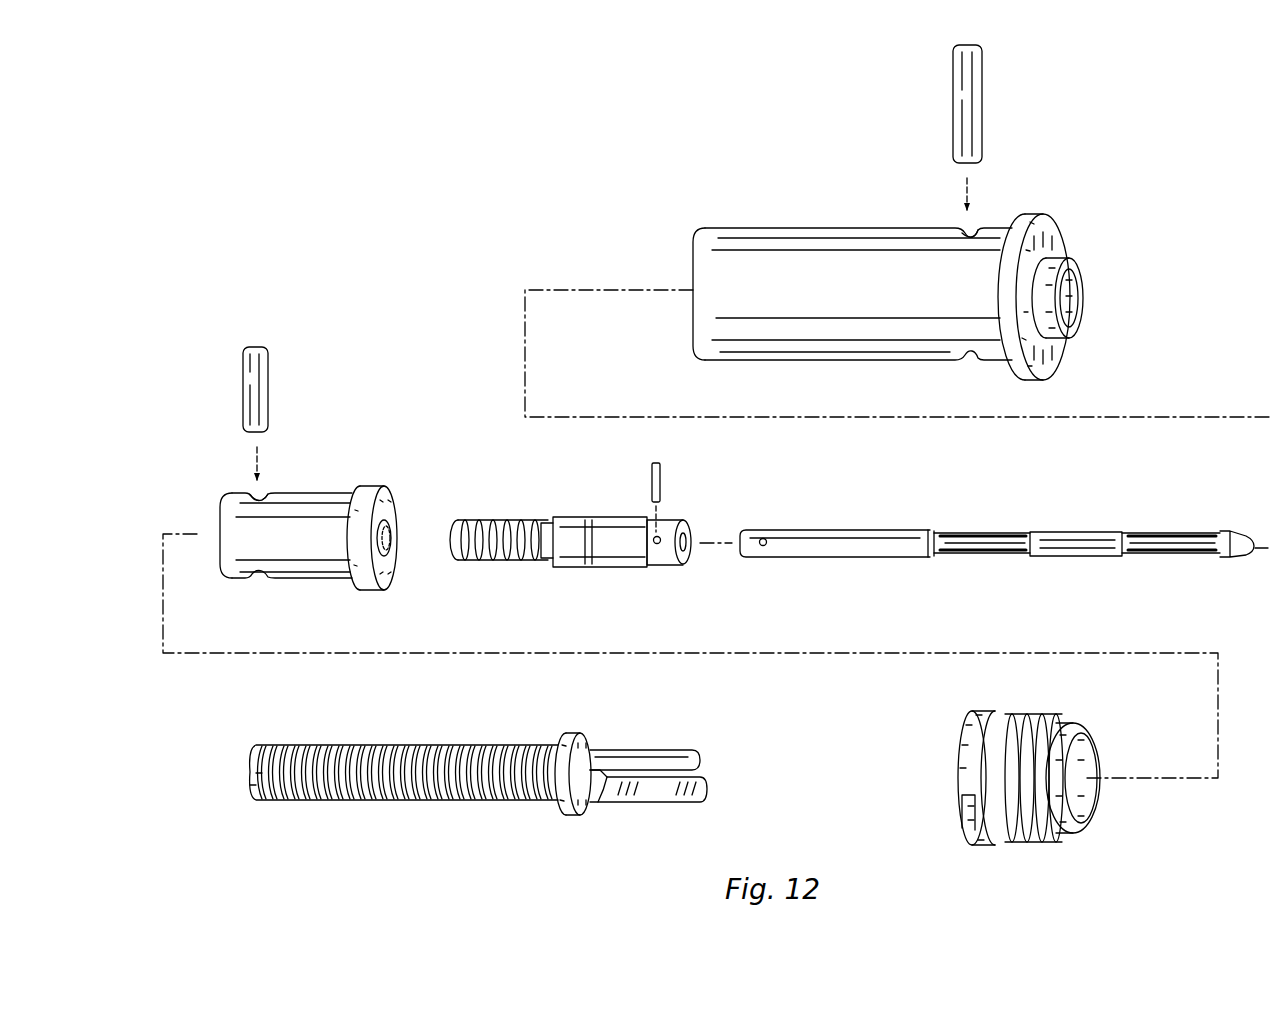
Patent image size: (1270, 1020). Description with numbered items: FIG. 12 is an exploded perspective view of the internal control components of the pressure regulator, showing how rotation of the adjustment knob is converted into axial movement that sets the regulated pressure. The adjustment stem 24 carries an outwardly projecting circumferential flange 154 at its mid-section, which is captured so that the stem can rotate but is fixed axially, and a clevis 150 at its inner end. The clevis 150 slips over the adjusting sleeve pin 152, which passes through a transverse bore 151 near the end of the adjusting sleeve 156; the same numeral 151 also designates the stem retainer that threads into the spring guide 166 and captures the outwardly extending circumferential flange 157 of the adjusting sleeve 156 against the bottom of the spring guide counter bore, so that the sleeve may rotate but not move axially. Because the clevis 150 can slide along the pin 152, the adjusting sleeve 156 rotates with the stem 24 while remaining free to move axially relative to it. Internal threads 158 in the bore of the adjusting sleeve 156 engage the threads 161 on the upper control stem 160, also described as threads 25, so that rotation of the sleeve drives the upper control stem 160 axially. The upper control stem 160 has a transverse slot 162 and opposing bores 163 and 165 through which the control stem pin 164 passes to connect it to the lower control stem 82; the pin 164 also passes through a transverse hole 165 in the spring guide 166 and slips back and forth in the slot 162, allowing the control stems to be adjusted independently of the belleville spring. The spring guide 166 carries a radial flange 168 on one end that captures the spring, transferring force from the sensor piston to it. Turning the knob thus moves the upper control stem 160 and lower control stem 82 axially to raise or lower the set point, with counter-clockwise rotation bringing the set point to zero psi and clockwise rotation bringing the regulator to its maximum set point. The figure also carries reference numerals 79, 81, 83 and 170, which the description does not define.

The adjustment stem 24 is at (343, 727).
The threads 25 is at (320, 800).
The shaft 79 is at (1068, 546).
The slotted shaft section 81 is at (983, 531).
The lower control stem 82 is at (1068, 500).
The slotted shaft section 83 is at (1172, 531).
The clevis 150 is at (657, 800).
The transverse bore 151 is at (253, 493).
The adjusting sleeve pin 152 is at (269, 357).
The circumferential flange 154 is at (571, 733).
The adjusting sleeve 156 is at (303, 589).
The circumferential flange 157 is at (357, 490).
The internal threads 158 is at (389, 549).
The upper control stem 160 is at (580, 577).
The threads 161 is at (497, 521).
The transverse slot 162 is at (620, 566).
The bore 163 is at (661, 536).
The control stem pin 164 is at (984, 68).
The transverse hole 165 is at (972, 225).
The spring guide 166 is at (809, 213).
The radial flange 168 is at (1032, 212).
The boss 170 is at (1050, 358).